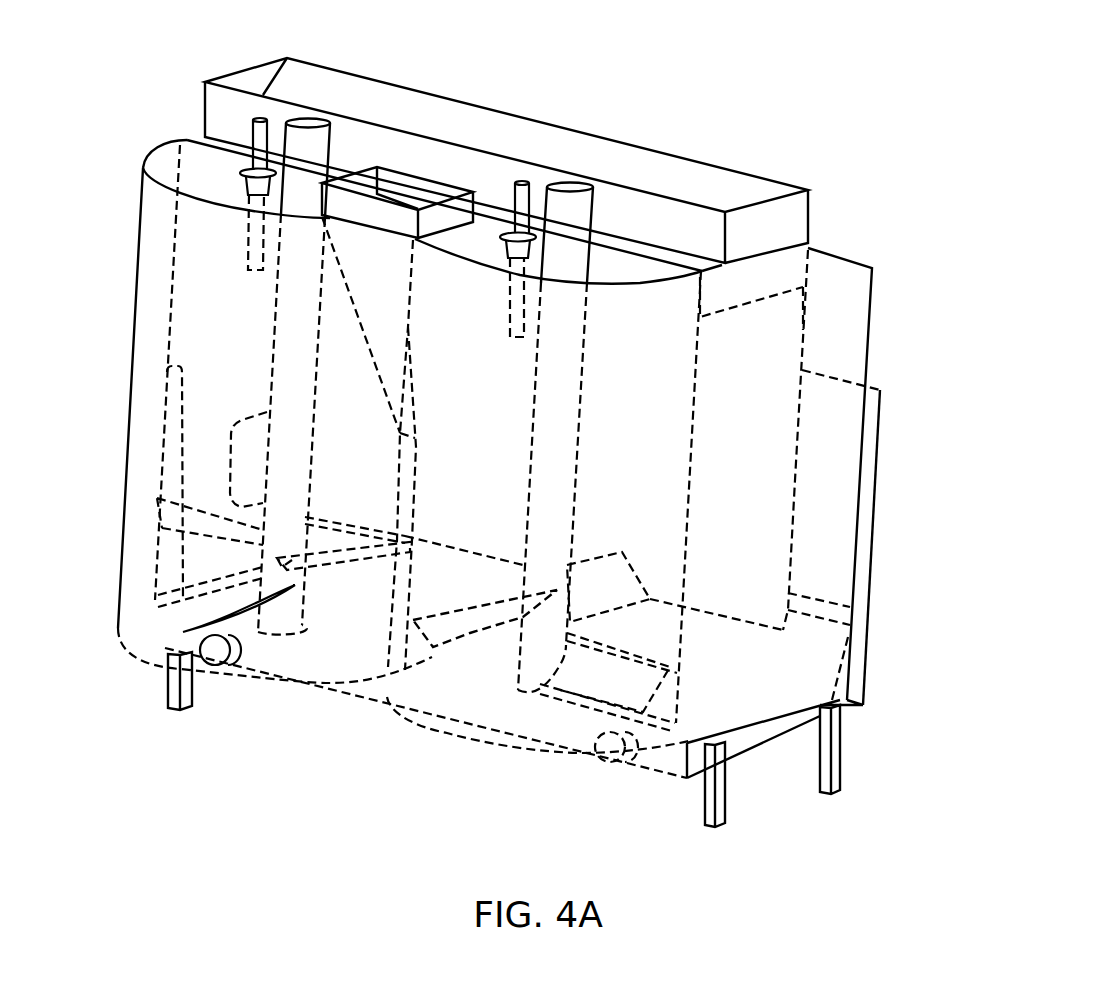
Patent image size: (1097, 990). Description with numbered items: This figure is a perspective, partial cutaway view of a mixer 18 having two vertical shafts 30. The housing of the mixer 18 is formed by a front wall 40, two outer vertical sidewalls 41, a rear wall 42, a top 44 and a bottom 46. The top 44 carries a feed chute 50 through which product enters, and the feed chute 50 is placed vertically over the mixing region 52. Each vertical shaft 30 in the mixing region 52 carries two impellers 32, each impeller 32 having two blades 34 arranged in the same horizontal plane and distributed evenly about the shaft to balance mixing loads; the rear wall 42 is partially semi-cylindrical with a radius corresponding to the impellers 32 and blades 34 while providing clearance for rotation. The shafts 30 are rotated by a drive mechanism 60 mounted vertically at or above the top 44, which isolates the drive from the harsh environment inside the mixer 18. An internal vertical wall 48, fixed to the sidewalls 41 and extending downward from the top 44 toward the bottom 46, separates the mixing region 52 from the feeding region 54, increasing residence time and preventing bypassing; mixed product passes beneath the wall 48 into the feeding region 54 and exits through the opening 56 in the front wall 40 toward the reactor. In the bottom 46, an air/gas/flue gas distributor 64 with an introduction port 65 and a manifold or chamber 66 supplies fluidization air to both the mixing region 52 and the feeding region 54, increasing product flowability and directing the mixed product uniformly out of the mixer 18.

The mixer 18 is at (736, 80).
The feed chute 50 is at (338, 96).
The drive mechanism 60 is at (627, 217).
The top 44 is at (636, 270).
The outer vertical sidewall 41 is at (862, 283).
The internal vertical wall 48 is at (800, 333).
The vertical shaft 30 is at (553, 332).
The mixing region 52 is at (457, 370).
The rear wall 42 is at (128, 458).
The opening 56 is at (849, 491).
The feeding region 54 is at (835, 584).
The front wall 40 is at (866, 647).
The impeller 32 is at (337, 553).
The blade 34 is at (183, 627).
The bottom 46 is at (318, 686).
The introduction port 65 is at (600, 762).
The manifold or chamber 66 is at (767, 703).
The air/gas/flue gas distributor 64 is at (885, 763).